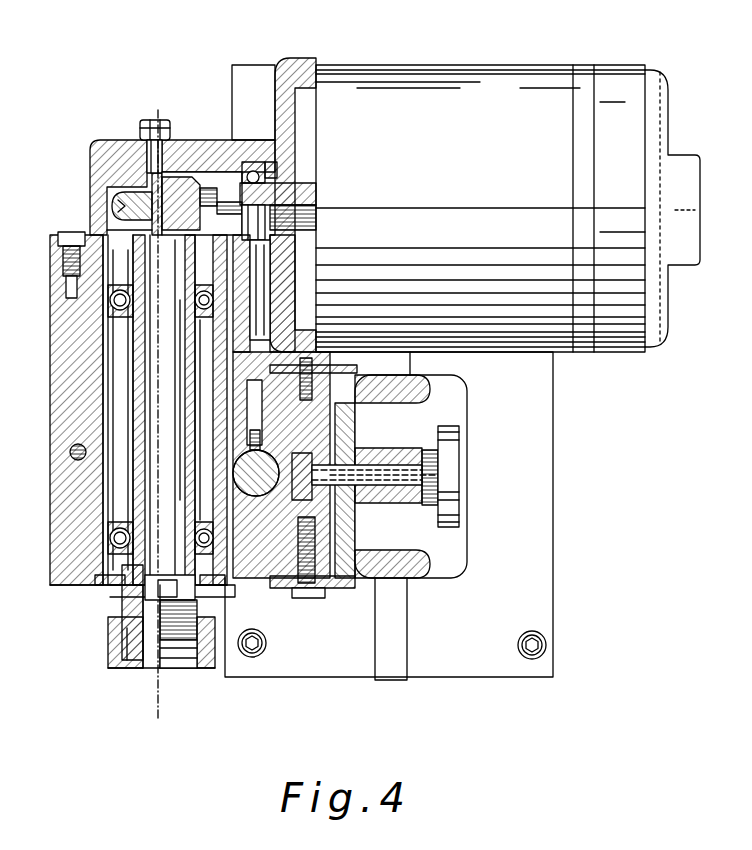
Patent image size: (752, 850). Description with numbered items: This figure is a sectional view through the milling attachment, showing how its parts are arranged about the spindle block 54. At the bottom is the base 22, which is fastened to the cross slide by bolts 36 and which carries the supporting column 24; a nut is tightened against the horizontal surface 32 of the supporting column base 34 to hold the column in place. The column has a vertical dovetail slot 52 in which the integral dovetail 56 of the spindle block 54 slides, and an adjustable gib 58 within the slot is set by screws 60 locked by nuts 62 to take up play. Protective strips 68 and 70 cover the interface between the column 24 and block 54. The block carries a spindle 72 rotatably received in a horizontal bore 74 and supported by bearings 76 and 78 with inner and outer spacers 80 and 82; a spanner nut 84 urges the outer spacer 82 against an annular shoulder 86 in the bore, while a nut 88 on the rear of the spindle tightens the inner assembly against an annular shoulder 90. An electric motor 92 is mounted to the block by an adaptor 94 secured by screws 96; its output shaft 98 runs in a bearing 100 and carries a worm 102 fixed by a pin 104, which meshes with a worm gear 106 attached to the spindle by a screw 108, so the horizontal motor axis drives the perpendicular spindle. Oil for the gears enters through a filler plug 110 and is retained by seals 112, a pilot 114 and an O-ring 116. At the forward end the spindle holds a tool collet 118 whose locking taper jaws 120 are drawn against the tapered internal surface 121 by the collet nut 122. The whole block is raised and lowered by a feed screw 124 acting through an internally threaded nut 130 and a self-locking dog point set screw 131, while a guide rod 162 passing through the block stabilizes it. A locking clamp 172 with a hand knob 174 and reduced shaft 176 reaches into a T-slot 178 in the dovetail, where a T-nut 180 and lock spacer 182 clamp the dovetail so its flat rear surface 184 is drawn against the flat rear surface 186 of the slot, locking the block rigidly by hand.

The base 22 is at (472, 660).
The supporting column 24 is at (376, 454).
The horizontal surface 32 is at (462, 390).
The supporting column base 34 is at (466, 558).
The bolts 36 is at (252, 658).
The dovetail slot 52 is at (264, 541).
The spindle block 54 is at (62, 578).
The dovetail 56 is at (312, 548).
The adjustable gib 58 is at (312, 520).
The screws 60 is at (285, 590).
The nuts 62 is at (300, 594).
The protective strip 68 is at (355, 585).
The protective strip 70 is at (340, 365).
The spindle 72 is at (172, 417).
The horizontal bore 74 is at (105, 420).
The bearing 76 is at (294, 406).
The bearing 78 is at (108, 318).
The inner spacer 80 is at (190, 500).
The outer spacer 82 is at (110, 490).
The spanner nut 84 is at (215, 590).
The annular shoulder 86 is at (214, 305).
The nut 88 is at (110, 308).
The annular shoulder 90 is at (150, 582).
The electric motor 92 is at (440, 65).
The adaptor 94 is at (232, 115).
The screws 96 is at (58, 244).
The output shaft 98 is at (316, 195).
The bearing 100 is at (265, 162).
The worm 102 is at (190, 177).
The pin 104 is at (225, 165).
The worm gear 106 is at (112, 200).
The screw 108 is at (130, 225).
The filler plug 110 is at (154, 120).
The seals 112 is at (63, 265).
The pilot 114 is at (72, 290).
The O-ring 116 is at (225, 262).
The tool collet 118 is at (110, 678).
The locking taper jaws 120 is at (120, 605).
The tapered internal surface 121 is at (119, 638).
The collet nut 122 is at (202, 668).
The feed screw 124 is at (256, 473).
The internally threaded nut 130 is at (249, 516).
The self-locking dog point set screw 131 is at (262, 432).
The guide rod 162 is at (70, 457).
The locking clamp 172 is at (462, 440).
The hand knob 174 is at (462, 478).
The reduced shaft 176 is at (415, 455).
The T-slot 178 is at (384, 492).
The T-nut 180 is at (355, 445).
The lock spacer 182 is at (430, 505).
The flat rear surface 184 is at (362, 520).
The flat rear surface 186 is at (355, 432).